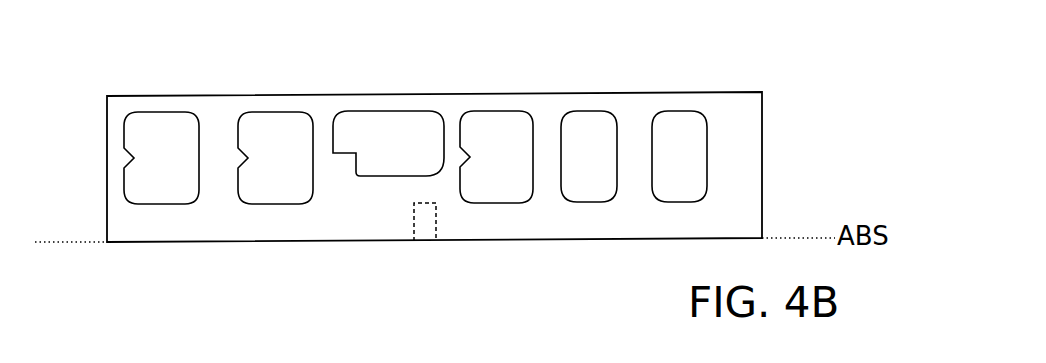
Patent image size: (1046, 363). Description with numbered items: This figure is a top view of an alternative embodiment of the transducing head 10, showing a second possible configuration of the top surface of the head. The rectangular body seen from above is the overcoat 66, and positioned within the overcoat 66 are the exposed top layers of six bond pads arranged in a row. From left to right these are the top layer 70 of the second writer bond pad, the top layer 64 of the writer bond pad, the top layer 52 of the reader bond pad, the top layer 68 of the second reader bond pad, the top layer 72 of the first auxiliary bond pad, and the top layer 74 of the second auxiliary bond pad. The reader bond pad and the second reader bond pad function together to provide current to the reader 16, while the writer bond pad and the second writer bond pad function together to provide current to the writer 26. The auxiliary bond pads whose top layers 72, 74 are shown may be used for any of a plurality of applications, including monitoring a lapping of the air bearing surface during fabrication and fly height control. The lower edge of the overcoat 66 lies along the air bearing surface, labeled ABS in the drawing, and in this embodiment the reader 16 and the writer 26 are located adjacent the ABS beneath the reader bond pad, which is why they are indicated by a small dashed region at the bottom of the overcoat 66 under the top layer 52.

The transducing head 10 is at (725, 53).
The overcoat 66 is at (200, 220).
The top layer of second writer bond pad 70 is at (161, 158).
The top layer of writer bond pad 64 is at (275, 158).
The top layer of reader bond pad 52 is at (388, 143).
The top layer of second reader bond pad 68 is at (496, 157).
The top layer of first auxiliary bond pad 72 is at (589, 156).
The top layer of second auxiliary bond pad 74 is at (679, 156).
The read transducer 16 is at (387, 252).
The writer transducer 26 is at (428, 220).